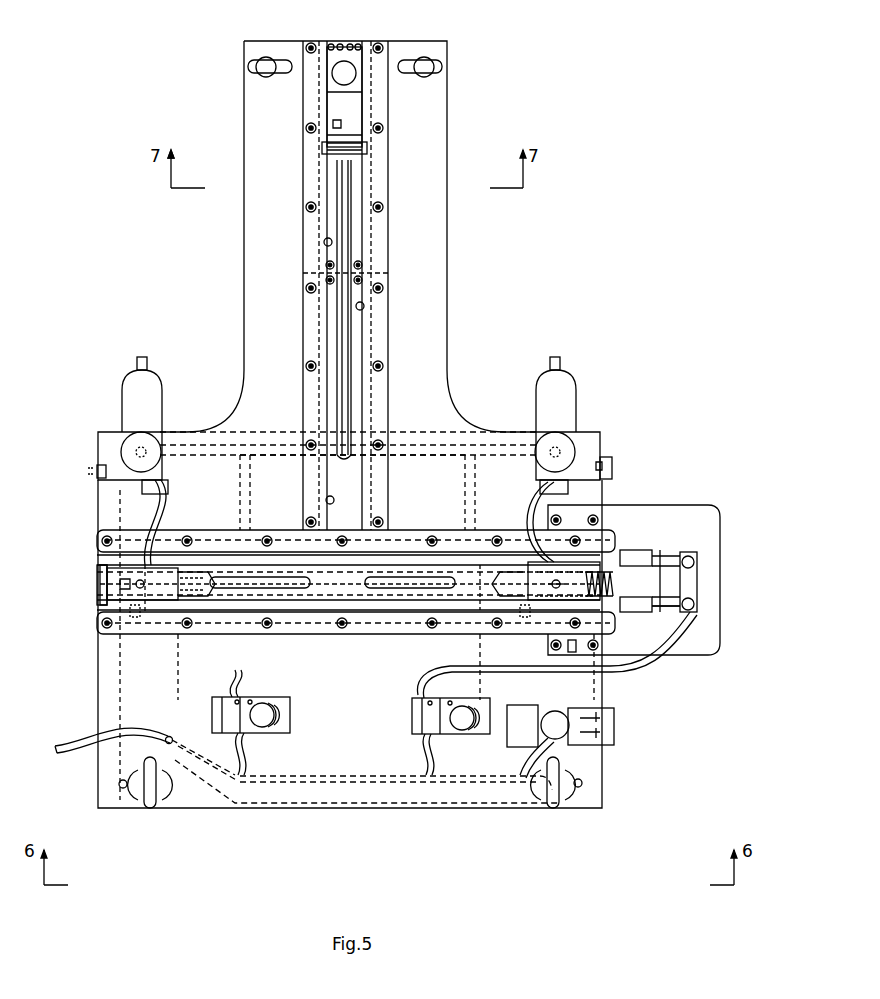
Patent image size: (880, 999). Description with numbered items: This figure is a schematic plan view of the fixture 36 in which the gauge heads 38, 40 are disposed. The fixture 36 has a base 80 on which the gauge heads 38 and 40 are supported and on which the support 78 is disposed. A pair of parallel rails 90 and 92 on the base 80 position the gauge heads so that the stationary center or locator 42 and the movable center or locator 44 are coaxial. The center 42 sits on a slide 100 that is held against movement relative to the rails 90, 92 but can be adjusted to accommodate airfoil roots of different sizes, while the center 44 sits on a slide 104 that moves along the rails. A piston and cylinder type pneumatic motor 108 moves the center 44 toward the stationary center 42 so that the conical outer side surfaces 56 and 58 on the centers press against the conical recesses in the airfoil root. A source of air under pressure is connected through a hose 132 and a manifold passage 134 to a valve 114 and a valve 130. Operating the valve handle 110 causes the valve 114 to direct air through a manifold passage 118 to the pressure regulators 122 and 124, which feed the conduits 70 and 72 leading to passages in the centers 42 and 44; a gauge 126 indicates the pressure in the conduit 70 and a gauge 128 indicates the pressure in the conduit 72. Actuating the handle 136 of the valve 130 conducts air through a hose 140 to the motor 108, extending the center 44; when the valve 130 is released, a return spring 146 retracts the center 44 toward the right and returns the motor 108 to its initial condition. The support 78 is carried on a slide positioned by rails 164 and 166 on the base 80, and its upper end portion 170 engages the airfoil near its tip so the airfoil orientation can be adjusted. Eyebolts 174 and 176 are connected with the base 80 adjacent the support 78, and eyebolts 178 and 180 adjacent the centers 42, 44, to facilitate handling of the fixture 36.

The fixture 36 is at (134, 322).
The gauge head 38 is at (100, 584).
The gauge head 40 is at (697, 594).
The center or locator 42 is at (180, 570).
The center or locator 44 is at (500, 570).
The conical outer side surface 56 is at (207, 628).
The conical outer side surface 58 is at (493, 600).
The conduit 70 is at (108, 536).
The conduit 72 is at (520, 470).
The support 78 is at (330, 46).
The base 80 is at (258, 248).
The rail 90 is at (355, 640).
The rail 92 is at (290, 530).
The slide 100 is at (175, 633).
The slide 104 is at (527, 605).
The pneumatic motor 108 is at (712, 505).
The valve handle 110 is at (268, 722).
The valve 114 is at (228, 720).
The manifold passage 118 is at (215, 445).
The pressure regulator 122 is at (130, 400).
The pressure regulator 124 is at (540, 385).
The gauge 126 is at (95, 455).
The gauge 128 is at (560, 447).
The valve 130 is at (422, 708).
The hose 132 is at (62, 752).
The manifold passage 134 is at (250, 808).
The handle 136 is at (462, 722).
The hose 140 is at (630, 688).
The return spring 146 is at (610, 550).
The rail 164 is at (312, 160).
The rail 166 is at (378, 152).
The upper end portion 170 is at (350, 46).
The eyebolt 174 is at (270, 72).
The eyebolt 176 is at (445, 67).
The eyebolt 178 is at (147, 800).
The eyebolt 180 is at (553, 800).